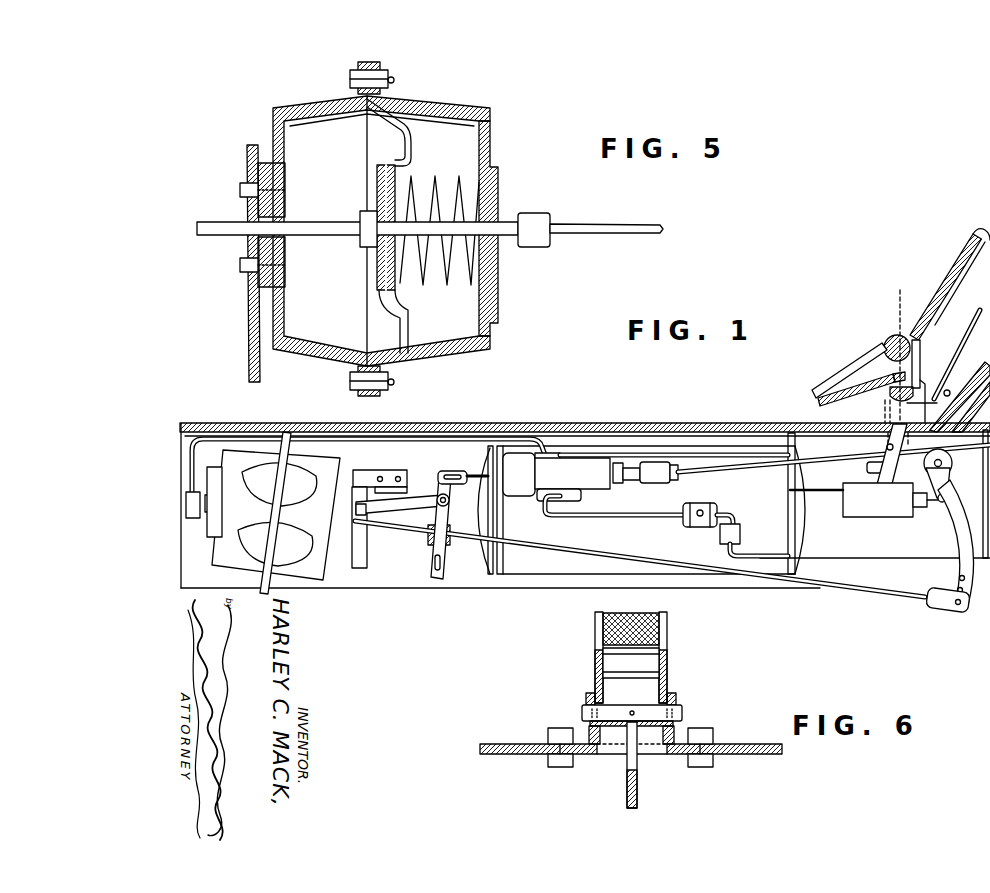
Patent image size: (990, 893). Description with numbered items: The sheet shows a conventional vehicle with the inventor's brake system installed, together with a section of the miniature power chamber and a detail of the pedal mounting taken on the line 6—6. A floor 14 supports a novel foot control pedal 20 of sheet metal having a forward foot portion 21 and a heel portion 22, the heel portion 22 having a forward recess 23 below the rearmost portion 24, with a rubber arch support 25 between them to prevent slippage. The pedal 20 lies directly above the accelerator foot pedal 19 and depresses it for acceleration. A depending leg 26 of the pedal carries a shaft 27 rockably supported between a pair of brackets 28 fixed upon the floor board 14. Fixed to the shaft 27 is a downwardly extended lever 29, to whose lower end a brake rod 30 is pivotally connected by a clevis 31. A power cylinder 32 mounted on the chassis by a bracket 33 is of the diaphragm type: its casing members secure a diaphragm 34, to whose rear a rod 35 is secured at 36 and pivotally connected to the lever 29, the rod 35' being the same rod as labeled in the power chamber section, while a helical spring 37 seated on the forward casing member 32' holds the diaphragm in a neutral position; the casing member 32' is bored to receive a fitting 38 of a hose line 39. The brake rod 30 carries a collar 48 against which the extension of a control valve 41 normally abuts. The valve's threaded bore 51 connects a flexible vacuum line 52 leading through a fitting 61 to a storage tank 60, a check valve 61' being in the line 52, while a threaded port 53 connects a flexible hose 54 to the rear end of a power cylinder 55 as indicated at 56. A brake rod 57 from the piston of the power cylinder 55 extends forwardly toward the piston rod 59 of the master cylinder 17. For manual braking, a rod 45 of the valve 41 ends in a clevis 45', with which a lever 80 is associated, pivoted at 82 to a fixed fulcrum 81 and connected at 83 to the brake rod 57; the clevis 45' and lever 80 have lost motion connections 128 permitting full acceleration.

In FIG. 1, the floor 14 is at (735, 418).
In FIG. 6, the floor 14 is at (765, 758).
In FIG. 1, the master cylinder 17 is at (857, 517).
In FIG. 1, the foot pedal 19 is at (973, 331).
In FIG. 1, the foot control pedal 20 is at (972, 238).
In FIG. 6, the foot control pedal 20 is at (670, 620).
In FIG. 1, the forward foot portion 21 is at (962, 283).
In FIG. 6, the forward foot portion 21 is at (613, 633).
In FIG. 1, the heel portion 22 is at (815, 397).
In FIG. 1, the forward recess 23 is at (857, 376).
In FIG. 1, the rearmost portion 24 is at (862, 462).
In FIG. 1, the arch support 25 is at (888, 336).
In FIG. 6, the arch support 25 is at (648, 662).
In FIG. 1, the depending leg 26 is at (918, 368).
In FIG. 1, the shaft 27 is at (920, 387).
In FIG. 6, the shaft 27 is at (685, 712).
In FIG. 6, the brackets 28 is at (588, 700).
In FIG. 1, the lever 29 is at (870, 491).
In FIG. 6, the lever 29 is at (627, 781).
In FIG. 1, the brake rod 30 is at (780, 473).
In FIG. 1, the clevis 31 is at (871, 458).
In FIG. 5, the power cylinder 32 is at (407, 229).
In FIG. 5, the forward casing member 32' is at (511, 226).
In FIG. 5, the bracket 33 is at (250, 330).
In FIG. 5, the diaphragm 34 is at (410, 140).
In FIG. 1, the rod 35 is at (950, 538).
In FIG. 5, the piston rod 35' is at (357, 208).
In FIG. 5, the securing point 36 is at (370, 212).
In FIG. 5, the helical spring 37 is at (432, 270).
In FIG. 5, the fitting 38 is at (510, 222).
In FIG. 5, the hose line 39 is at (603, 233).
In FIG. 1, the control valve 41 is at (590, 458).
In FIG. 1, the rod 45 is at (469, 498).
In FIG. 1, the clevis 45' is at (463, 429).
In FIG. 1, the collar 48 is at (652, 462).
In FIG. 1, the threaded bore 51 is at (541, 502).
In FIG. 1, the vacuum line 52 is at (605, 516).
In FIG. 1, the threaded port 53 is at (548, 453).
In FIG. 1, the flexible hose 54 is at (480, 437).
In FIG. 1, the power cylinder 55 is at (313, 572).
In FIG. 1, the hose connection 56 is at (193, 518).
In FIG. 1, the brake rod 57 is at (575, 562).
In FIG. 1, the piston rod 59 is at (932, 508).
In FIG. 1, the storage tank 60 is at (672, 455).
In FIG. 1, the fitting 61 is at (698, 530).
In FIG. 1, the check valve 61' is at (754, 534).
In FIG. 1, the lever 80 is at (445, 545).
In FIG. 1, the fulcrum 81 is at (405, 512).
In FIG. 1, the pivot 82 is at (441, 497).
In FIG. 1, the connection 83 is at (436, 575).
In FIG. 1, the lost motion connections 128 is at (448, 471).
In FIG. 1, the section line 6 is at (912, 307).